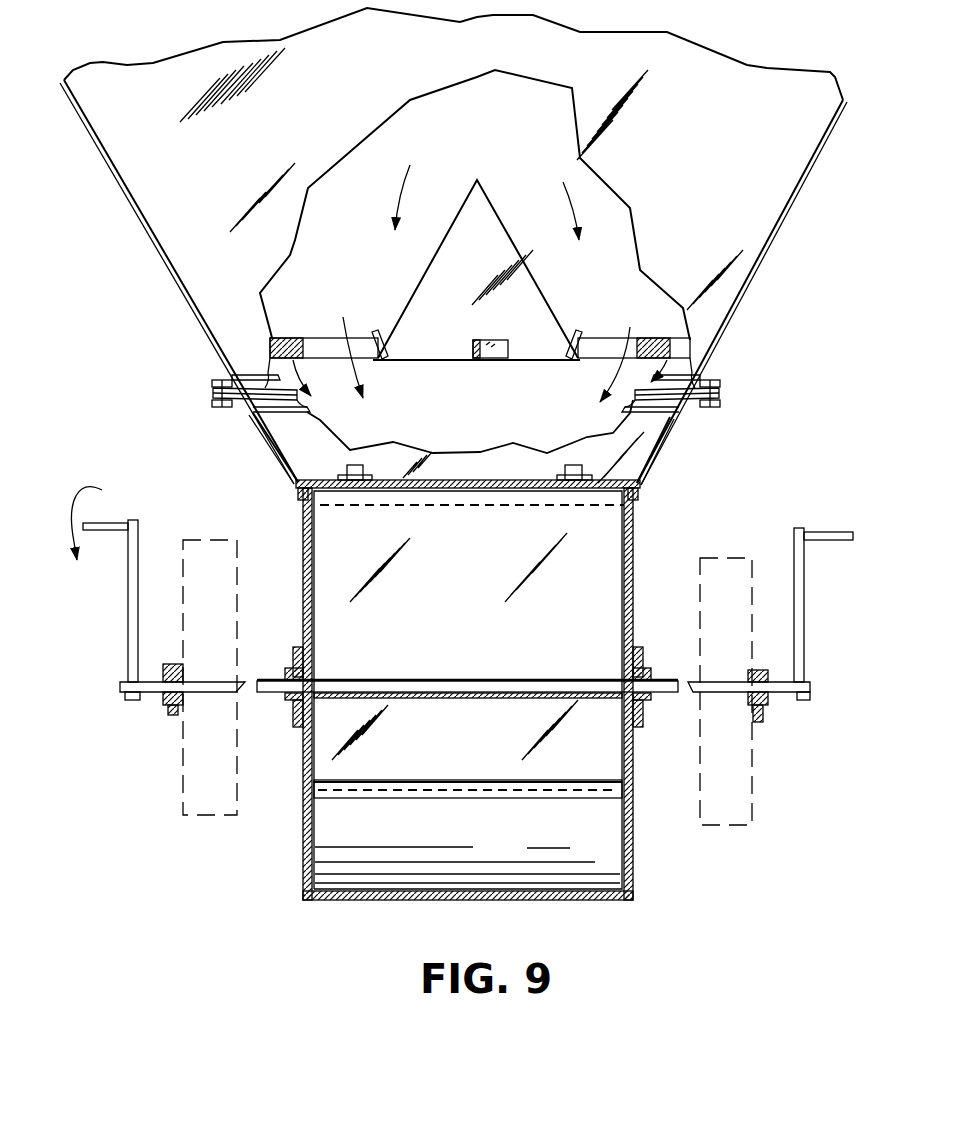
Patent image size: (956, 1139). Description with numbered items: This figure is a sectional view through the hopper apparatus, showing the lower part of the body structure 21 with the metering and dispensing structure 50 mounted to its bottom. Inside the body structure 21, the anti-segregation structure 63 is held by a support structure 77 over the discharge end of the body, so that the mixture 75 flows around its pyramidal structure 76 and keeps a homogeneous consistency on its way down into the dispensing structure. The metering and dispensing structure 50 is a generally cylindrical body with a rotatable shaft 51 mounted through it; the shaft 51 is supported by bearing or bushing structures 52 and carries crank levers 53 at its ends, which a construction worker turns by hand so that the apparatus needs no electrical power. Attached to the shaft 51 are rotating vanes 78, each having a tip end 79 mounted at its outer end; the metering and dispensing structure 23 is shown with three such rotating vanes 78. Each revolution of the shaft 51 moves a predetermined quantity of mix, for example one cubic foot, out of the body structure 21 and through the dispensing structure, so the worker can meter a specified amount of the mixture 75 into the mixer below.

The body structure 21 is at (729, 152).
The mixture 75 is at (535, 151).
The anti-segregation structure 63 is at (552, 298).
The pyramidal structure 76 is at (412, 310).
The support structure 77 is at (293, 337).
The metering and dispensing structure 50 is at (635, 747).
The rotating vanes 78 is at (466, 641).
The tip end 79 is at (467, 797).
The rotatable shaft 51 is at (470, 692).
The metering and dispensing structure 23 is at (284, 727).
The bearing or bushing structures 52 is at (757, 672).
The crank levers 53 is at (128, 587).